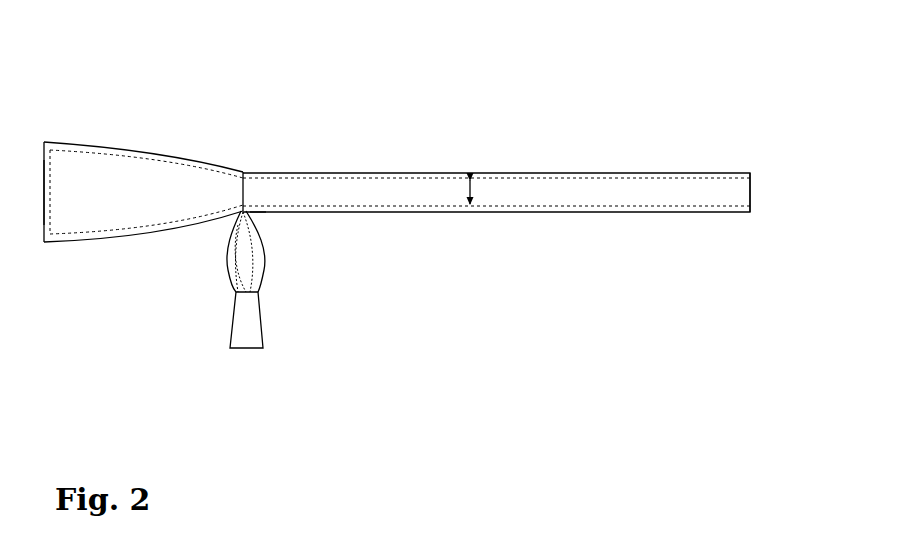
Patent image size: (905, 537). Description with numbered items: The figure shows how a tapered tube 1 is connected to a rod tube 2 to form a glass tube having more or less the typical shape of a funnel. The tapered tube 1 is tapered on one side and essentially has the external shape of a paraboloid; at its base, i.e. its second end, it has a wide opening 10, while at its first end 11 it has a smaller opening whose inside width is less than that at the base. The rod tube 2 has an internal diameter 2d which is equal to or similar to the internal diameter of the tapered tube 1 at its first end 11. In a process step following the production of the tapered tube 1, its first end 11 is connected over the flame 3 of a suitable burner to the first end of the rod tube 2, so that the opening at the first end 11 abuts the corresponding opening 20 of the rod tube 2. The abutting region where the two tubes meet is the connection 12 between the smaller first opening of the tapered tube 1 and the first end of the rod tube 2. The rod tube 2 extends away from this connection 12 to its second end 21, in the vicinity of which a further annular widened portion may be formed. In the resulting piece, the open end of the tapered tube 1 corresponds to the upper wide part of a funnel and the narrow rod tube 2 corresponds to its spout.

The tapered tube 1 is at (83, 141).
The opening 10 is at (40, 198).
The first end 11 is at (238, 167).
The connection 12 is at (244, 169).
The rod tube 2 is at (520, 172).
The second end 21 is at (756, 198).
The internal diameter 2d is at (470, 191).
The opening 20 is at (258, 212).
The flame 3 is at (222, 268).